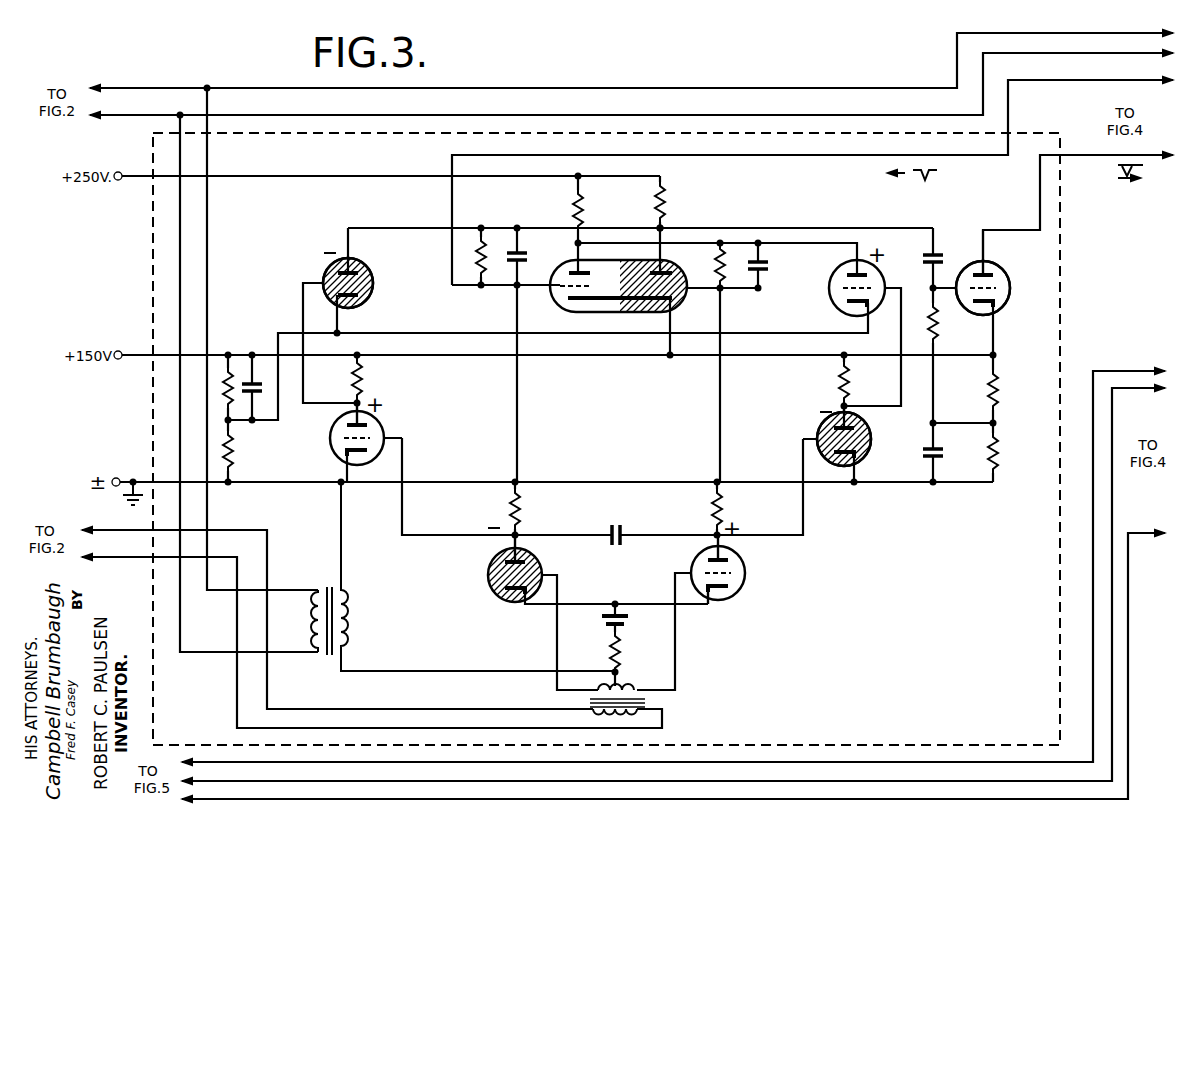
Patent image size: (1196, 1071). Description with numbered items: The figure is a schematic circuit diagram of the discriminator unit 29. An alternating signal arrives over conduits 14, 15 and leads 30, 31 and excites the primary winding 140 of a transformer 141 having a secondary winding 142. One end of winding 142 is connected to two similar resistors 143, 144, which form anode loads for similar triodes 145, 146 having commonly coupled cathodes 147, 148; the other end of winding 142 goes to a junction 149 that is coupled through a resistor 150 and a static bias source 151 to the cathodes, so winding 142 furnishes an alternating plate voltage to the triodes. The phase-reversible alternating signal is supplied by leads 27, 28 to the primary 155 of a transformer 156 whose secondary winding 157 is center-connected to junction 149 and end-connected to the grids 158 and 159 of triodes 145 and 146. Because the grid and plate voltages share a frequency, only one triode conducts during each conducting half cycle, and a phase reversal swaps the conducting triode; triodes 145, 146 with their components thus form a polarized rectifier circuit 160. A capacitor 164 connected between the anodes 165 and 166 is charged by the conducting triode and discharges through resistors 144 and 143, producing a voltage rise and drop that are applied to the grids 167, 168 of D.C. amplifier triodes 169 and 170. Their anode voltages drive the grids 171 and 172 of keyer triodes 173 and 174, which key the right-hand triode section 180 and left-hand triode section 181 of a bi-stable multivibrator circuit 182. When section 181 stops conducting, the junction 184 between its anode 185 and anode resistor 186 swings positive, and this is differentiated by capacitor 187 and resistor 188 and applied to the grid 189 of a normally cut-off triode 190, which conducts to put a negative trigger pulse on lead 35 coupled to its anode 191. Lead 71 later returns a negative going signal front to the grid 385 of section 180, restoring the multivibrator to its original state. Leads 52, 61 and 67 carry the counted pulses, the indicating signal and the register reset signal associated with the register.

The conduit 14 is at (137, 87).
The conduit 15 is at (129, 119).
The lead 27 is at (108, 530).
The lead 28 is at (127, 557).
The discriminator unit 29 is at (598, 124).
The lead 30 is at (207, 101).
The lead 31 is at (180, 155).
The lead 35 is at (1090, 157).
The lead 52 is at (1146, 536).
The lead 61 is at (1140, 389).
The lead 67 is at (1132, 371).
The lead 71 is at (452, 203).
The primary winding 140 is at (311, 627).
The transformer 141 is at (319, 580).
The secondary winding 142 is at (353, 613).
The resistor 143 is at (509, 510).
The resistor 144 is at (726, 505).
The triode 145 is at (484, 578).
The triode 146 is at (752, 580).
The cathode 147 is at (514, 604).
The cathode 148 is at (725, 609).
The junction 149 is at (622, 672).
The resistor 150 is at (622, 650).
The static bias source 151 is at (628, 621).
The primary winding 155 is at (592, 710).
The transformer 156 is at (655, 700).
The secondary winding 157 is at (606, 686).
The grid 158 is at (536, 578).
The grid 159 is at (705, 572).
The polarized rectifier circuit 160 is at (636, 581).
The capacitor 164 is at (617, 520).
The anode 165 is at (503, 558).
The anode 166 is at (732, 561).
The grid 167 is at (831, 440).
The grid 168 is at (370, 438).
The D.C. amplifier triode 169 is at (879, 440).
The D.C. amplifier triode 170 is at (328, 445).
The grid 171 is at (868, 290).
The grid 172 is at (339, 284).
The keyer triode 173 is at (829, 283).
The keyer triode 174 is at (364, 275).
The triode section 180 is at (562, 300).
The triode section 181 is at (681, 304).
The bi-stable multivibrator circuit 182 is at (620, 322).
The junction 184 is at (661, 228).
The anode 185 is at (667, 271).
The anode resistor 186 is at (663, 203).
The capacitor 187 is at (941, 253).
The resistor 188 is at (937, 331).
The grid 189 is at (1010, 290).
The triode 190 is at (1014, 307).
The anode 191 is at (1000, 274).
The grid 385 is at (566, 287).